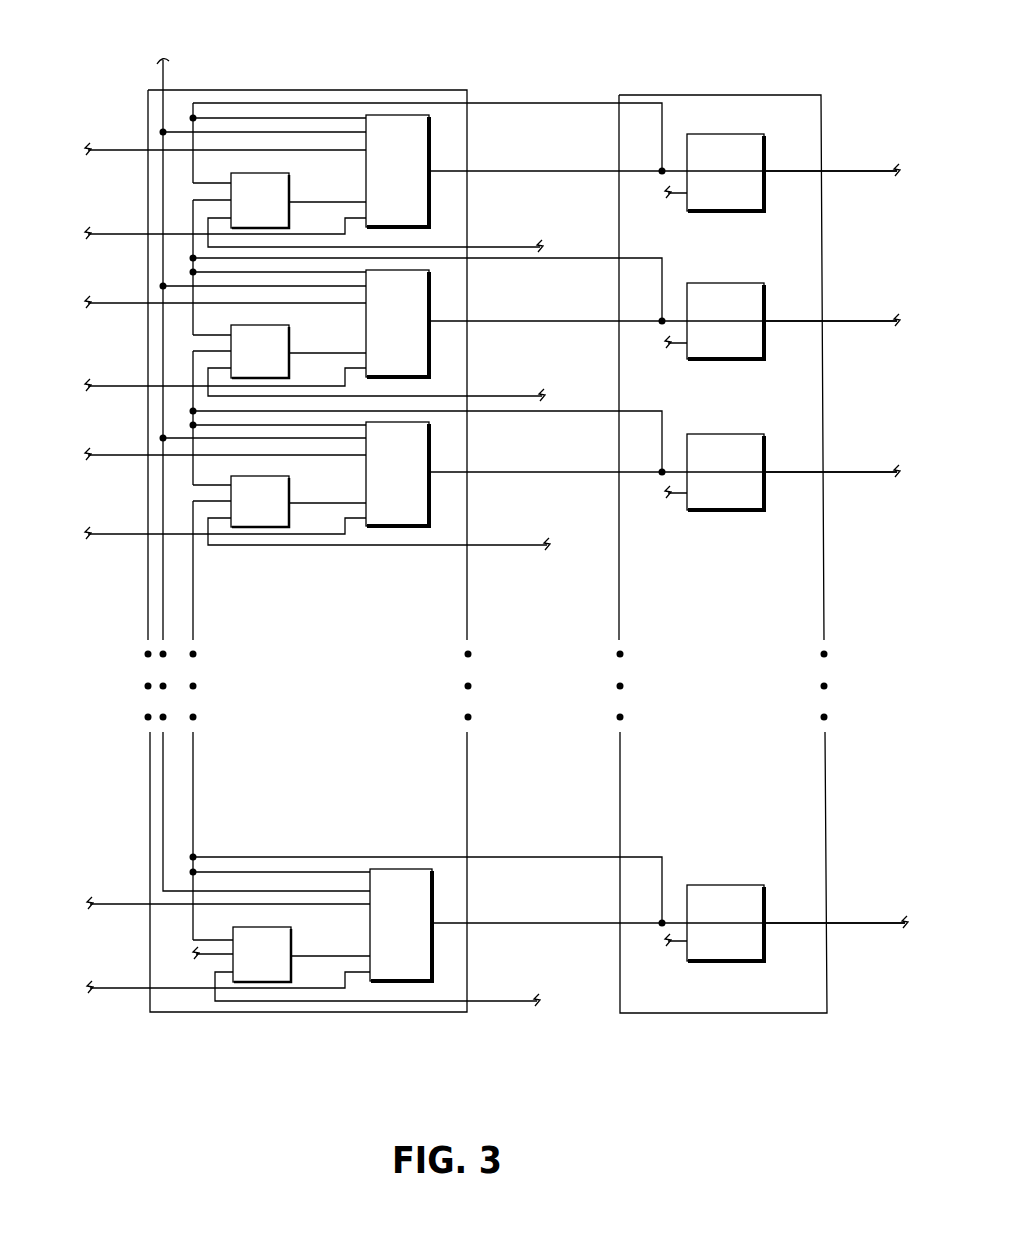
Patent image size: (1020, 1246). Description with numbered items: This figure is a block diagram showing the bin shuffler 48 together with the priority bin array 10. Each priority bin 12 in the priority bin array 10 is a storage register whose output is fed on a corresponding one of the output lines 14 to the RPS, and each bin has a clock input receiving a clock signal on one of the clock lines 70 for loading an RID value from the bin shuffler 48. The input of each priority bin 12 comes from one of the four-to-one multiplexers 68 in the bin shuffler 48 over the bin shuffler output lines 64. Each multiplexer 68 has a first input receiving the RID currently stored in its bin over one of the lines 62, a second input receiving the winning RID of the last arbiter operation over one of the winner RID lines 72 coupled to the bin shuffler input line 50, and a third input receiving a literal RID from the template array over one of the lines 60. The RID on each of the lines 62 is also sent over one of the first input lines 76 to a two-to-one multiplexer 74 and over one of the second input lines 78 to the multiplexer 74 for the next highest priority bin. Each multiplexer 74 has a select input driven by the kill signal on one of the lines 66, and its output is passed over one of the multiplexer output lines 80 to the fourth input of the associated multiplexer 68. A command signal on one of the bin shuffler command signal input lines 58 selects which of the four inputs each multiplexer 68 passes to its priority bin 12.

The priority bin array 10 is at (806, 120).
The priority bin 12 is at (737, 183).
The output lines 14 is at (857, 173).
The bin shuffler 48 is at (460, 205).
The bin shuffler input line 50 is at (168, 60).
The bin shuffler command signal input lines 58 is at (109, 233).
The lines 60 is at (108, 148).
The lines 62 is at (500, 103).
The bin shuffler output lines 64 is at (520, 170).
The lines 66 is at (503, 398).
The four-to-one multiplexers 68 is at (408, 181).
The clock lines 70 is at (670, 340).
The winner RID lines 72 is at (247, 130).
The two-to-one multiplexers 74 is at (271, 211).
The first input lines 76 is at (190, 166).
The second input lines 78 is at (190, 208).
The multiplexer output lines 80 is at (329, 202).